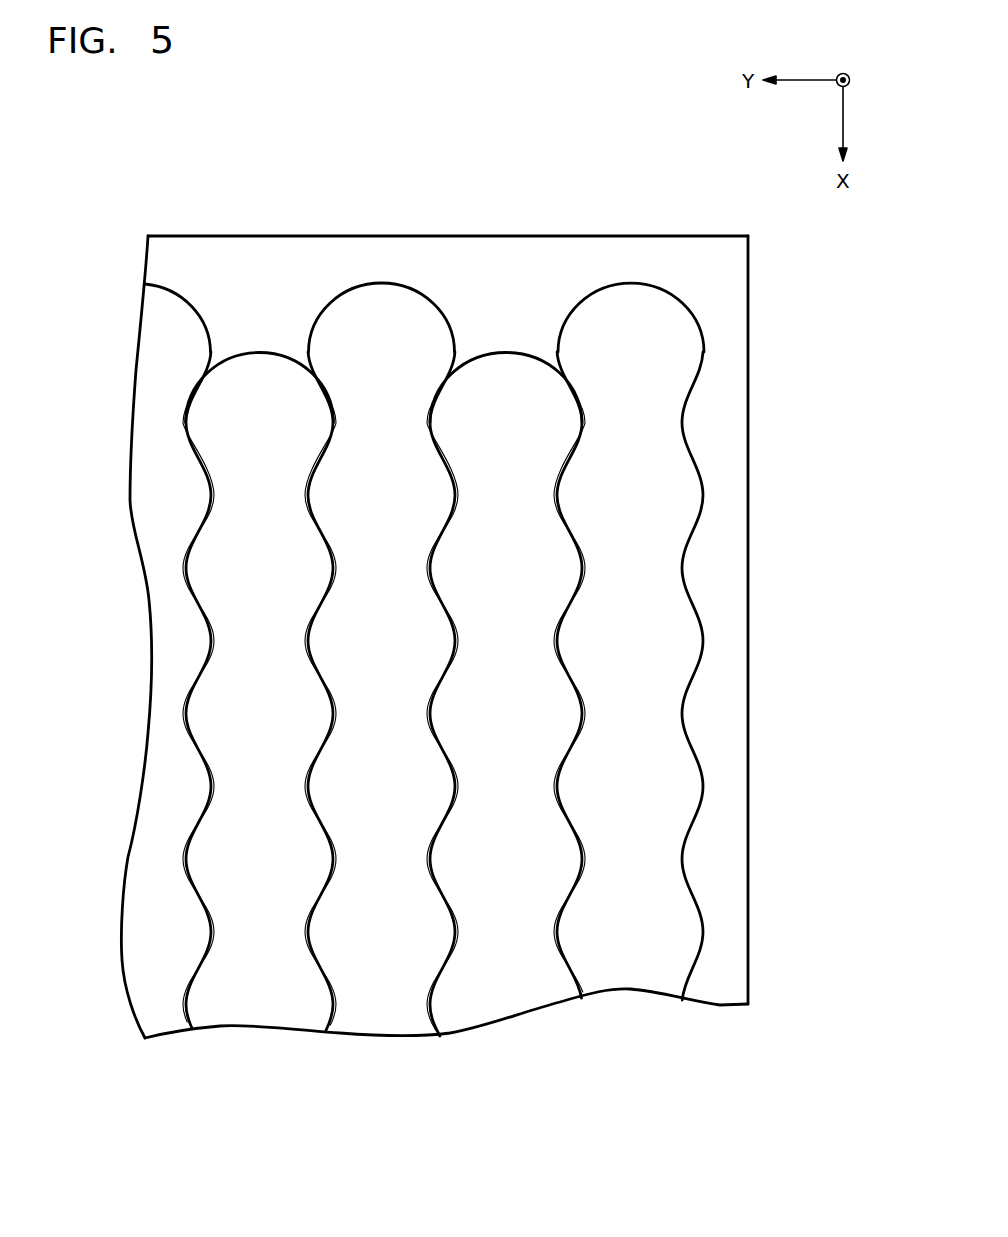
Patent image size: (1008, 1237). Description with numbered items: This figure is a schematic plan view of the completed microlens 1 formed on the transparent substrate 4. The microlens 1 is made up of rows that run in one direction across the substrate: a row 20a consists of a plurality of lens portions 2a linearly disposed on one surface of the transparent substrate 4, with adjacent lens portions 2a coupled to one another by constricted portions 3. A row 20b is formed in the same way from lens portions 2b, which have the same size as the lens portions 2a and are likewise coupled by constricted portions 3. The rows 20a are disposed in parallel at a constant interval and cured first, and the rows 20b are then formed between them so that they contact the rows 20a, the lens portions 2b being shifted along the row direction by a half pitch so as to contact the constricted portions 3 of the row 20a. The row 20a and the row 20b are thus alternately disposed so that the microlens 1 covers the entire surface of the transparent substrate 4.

The microlens 1 is at (466, 228).
The row 20a is at (389, 274).
The row 20b is at (516, 338).
The lens portion 2a is at (395, 502).
The lens portion 2b is at (513, 427).
The constricted portion 3 is at (682, 572).
The transparent substrate 4 is at (728, 982).